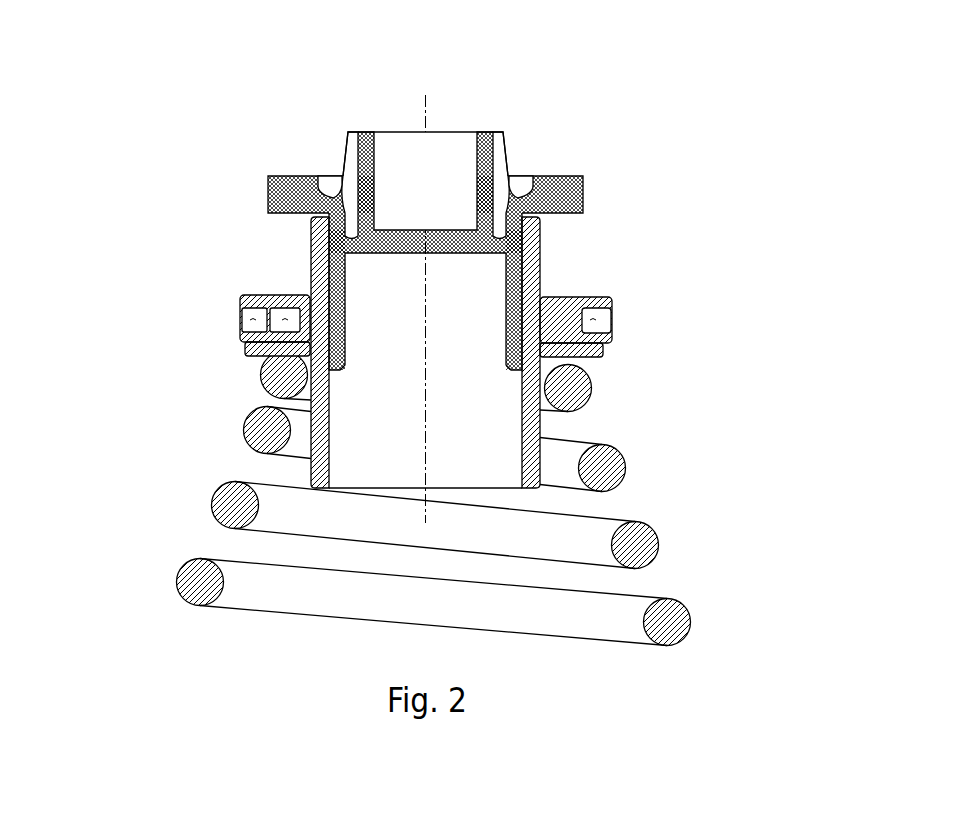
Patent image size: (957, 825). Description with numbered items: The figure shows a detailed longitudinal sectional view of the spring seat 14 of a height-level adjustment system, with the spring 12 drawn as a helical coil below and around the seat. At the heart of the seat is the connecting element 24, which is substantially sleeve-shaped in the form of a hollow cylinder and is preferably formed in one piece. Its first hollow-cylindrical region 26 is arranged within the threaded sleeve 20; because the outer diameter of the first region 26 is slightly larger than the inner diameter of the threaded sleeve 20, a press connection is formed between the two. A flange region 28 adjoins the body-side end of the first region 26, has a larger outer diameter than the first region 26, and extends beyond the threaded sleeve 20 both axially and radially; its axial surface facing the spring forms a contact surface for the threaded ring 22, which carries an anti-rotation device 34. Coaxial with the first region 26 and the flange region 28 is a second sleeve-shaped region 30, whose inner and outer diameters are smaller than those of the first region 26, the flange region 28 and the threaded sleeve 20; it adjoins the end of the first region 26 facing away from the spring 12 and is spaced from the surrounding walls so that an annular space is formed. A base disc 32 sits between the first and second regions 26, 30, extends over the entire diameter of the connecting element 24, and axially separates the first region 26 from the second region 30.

The spring 12 is at (655, 530).
The spring seat 14 is at (284, 125).
The threaded sleeve 20 is at (589, 387).
The threaded ring 22 is at (612, 312).
The connecting element 24 is at (318, 258).
The first hollow-cylindrical region 26 is at (540, 288).
The flange region 28 is at (583, 183).
The second sleeve-shaped region 30 is at (495, 150).
The base disc 32 is at (584, 204).
The anti-rotation device 34 is at (240, 320).